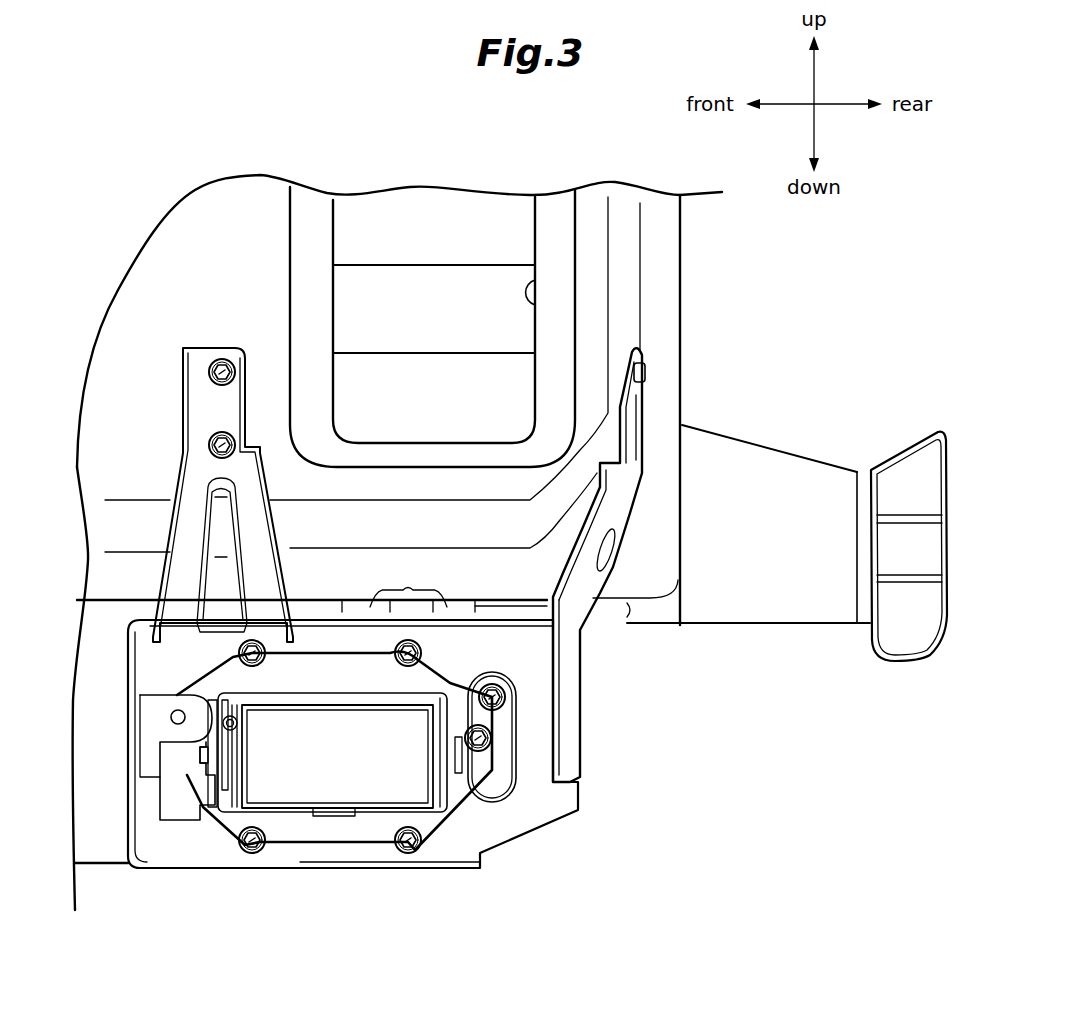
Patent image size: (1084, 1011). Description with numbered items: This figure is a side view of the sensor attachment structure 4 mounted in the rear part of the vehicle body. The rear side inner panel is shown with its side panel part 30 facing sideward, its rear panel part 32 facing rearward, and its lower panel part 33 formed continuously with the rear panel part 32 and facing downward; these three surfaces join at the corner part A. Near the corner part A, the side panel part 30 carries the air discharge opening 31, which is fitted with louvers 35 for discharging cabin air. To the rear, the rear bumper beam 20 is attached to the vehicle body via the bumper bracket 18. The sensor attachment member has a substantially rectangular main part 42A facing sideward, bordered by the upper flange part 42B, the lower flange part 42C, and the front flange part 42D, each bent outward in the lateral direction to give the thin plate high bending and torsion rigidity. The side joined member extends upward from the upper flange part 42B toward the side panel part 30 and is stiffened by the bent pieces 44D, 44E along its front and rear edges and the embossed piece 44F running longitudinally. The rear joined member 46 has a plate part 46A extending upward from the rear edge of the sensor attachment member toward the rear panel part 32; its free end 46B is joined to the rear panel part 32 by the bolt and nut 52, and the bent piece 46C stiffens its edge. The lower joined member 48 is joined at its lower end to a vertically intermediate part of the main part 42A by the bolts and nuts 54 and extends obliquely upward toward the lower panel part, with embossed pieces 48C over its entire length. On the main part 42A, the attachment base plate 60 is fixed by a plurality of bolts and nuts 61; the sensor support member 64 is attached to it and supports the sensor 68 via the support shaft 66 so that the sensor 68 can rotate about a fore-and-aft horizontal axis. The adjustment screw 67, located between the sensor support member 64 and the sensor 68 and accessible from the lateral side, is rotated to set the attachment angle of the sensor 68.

The sensor attachment structure 4 is at (598, 808).
The bumper bracket 18 is at (766, 612).
The rear bumper beam 20 is at (905, 660).
The side panel part 30 is at (590, 392).
The air discharge opening 31 is at (535, 305).
The rear panel part 32 is at (630, 310).
The lower panel part 33 is at (135, 502).
The louvers 35 is at (350, 232).
The main part 42A is at (290, 856).
The upper flange part 42B is at (336, 612).
The lower flange part 42C is at (353, 870).
The front flange part 42D is at (132, 832).
The bent piece 44D is at (212, 375).
The bent piece 44E is at (273, 518).
The embossed piece 44F is at (212, 577).
The rear joined member 46 is at (668, 565).
The plate part 46A is at (620, 605).
The free end 46B is at (640, 397).
The bent piece 46C is at (562, 732).
The lower joined member 48 is at (485, 612).
The embossed pieces 48C is at (408, 582).
The bolt and nut 52 is at (645, 370).
The bolts and nuts 54 is at (506, 697).
The attachment base plate 60 is at (478, 775).
The bolts and nuts 61 is at (410, 655).
The sensor support member 64 is at (203, 773).
The support shaft 66 is at (233, 760).
The adjustment screw 67 is at (215, 745).
The sensor 68 is at (303, 797).
The corner part A is at (585, 500).